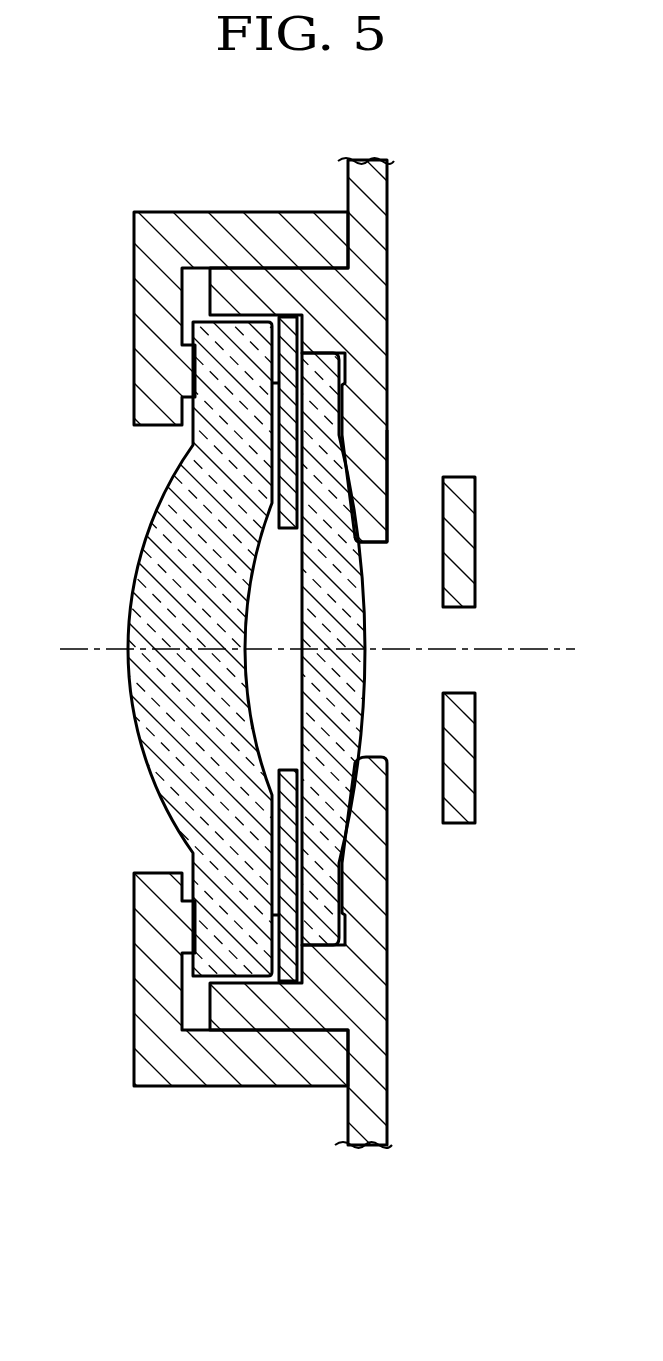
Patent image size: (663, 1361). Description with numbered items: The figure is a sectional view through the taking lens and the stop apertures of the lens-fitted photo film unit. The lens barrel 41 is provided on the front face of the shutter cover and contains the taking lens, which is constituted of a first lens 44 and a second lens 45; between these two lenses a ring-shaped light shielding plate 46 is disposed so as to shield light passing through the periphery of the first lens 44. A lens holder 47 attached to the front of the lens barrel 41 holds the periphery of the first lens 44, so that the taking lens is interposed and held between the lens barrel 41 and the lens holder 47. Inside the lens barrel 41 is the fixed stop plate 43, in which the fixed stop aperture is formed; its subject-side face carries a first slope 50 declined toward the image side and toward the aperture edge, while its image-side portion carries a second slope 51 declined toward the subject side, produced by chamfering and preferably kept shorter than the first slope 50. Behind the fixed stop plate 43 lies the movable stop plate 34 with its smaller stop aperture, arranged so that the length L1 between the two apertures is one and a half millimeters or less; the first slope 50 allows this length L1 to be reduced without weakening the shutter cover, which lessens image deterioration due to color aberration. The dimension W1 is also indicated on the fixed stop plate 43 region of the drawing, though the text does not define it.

The movable stop plate 34 is at (468, 535).
The lens barrel 41 is at (255, 288).
The fixed stop plate 43 is at (363, 820).
The first lens 44 is at (152, 604).
The second lens 45 is at (322, 409).
The light shielding plate 46 is at (283, 500).
The lens holder 47 is at (150, 324).
The first slope 50 is at (366, 497).
The second slope 51 is at (380, 543).
The length L1 is at (430, 734).
The width W1 is at (348, 1145).